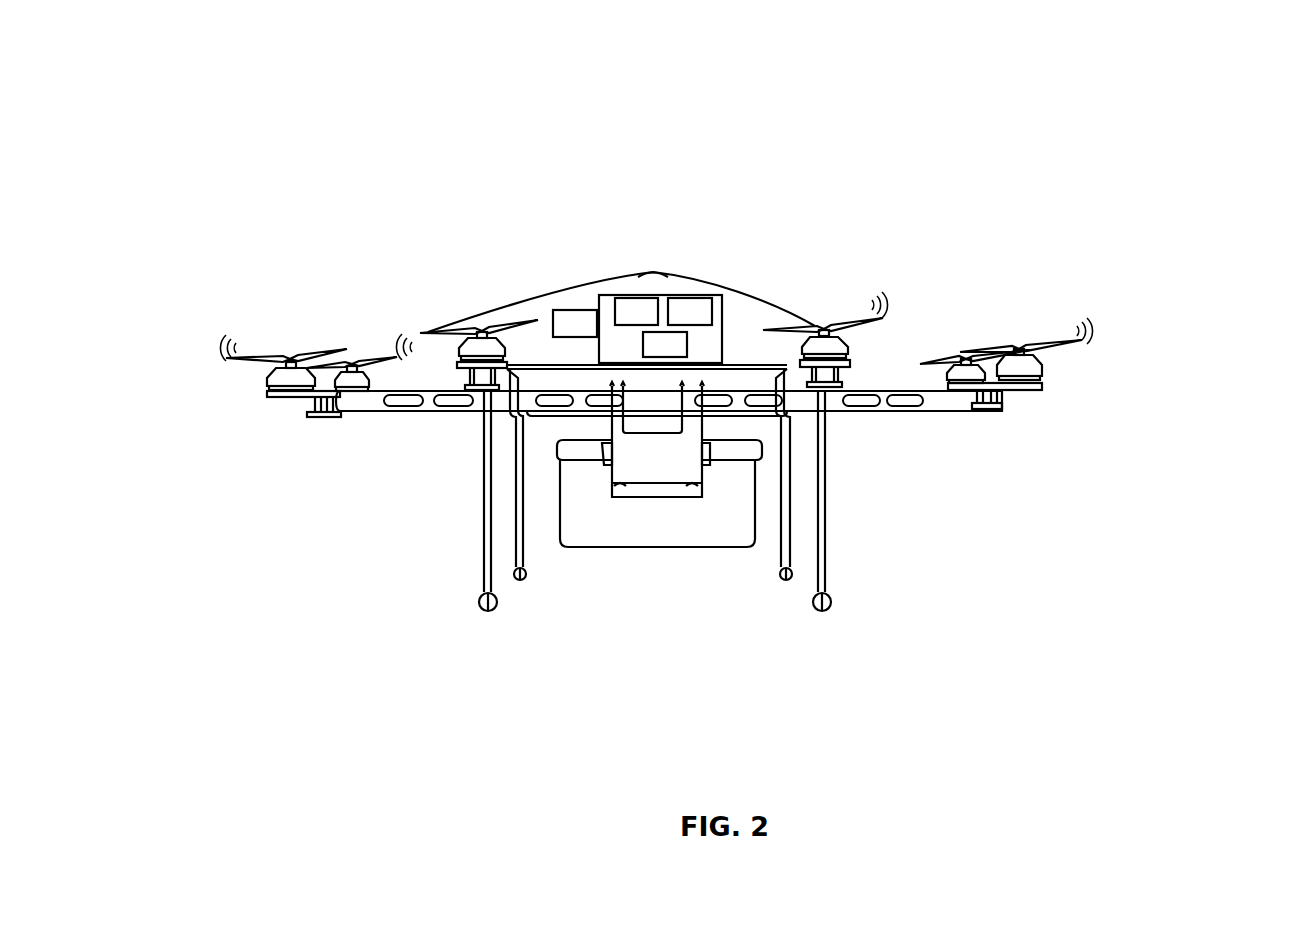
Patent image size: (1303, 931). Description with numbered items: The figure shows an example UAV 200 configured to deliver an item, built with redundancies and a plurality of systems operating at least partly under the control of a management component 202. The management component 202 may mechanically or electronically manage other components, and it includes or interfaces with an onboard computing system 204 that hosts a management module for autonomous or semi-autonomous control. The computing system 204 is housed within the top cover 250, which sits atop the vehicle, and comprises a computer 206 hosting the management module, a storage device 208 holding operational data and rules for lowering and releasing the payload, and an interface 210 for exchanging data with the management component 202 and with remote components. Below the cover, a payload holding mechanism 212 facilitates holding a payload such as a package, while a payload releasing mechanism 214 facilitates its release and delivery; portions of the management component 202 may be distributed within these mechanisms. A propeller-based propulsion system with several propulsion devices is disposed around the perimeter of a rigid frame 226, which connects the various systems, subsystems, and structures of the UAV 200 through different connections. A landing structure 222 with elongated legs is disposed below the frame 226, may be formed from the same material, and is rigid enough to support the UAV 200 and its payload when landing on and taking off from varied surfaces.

The UAV 200 is at (1190, 88).
The management component 202 is at (554, 310).
The onboard computing system 204 is at (637, 297).
The computer 206 is at (662, 297).
The storage device 208 is at (713, 300).
The interface 210 is at (687, 347).
The payload holding mechanism 212 is at (712, 547).
The payload releasing mechanism 214 is at (635, 478).
The landing structure 222 is at (462, 536).
The frame 226 is at (877, 411).
The top cover 250 is at (697, 280).